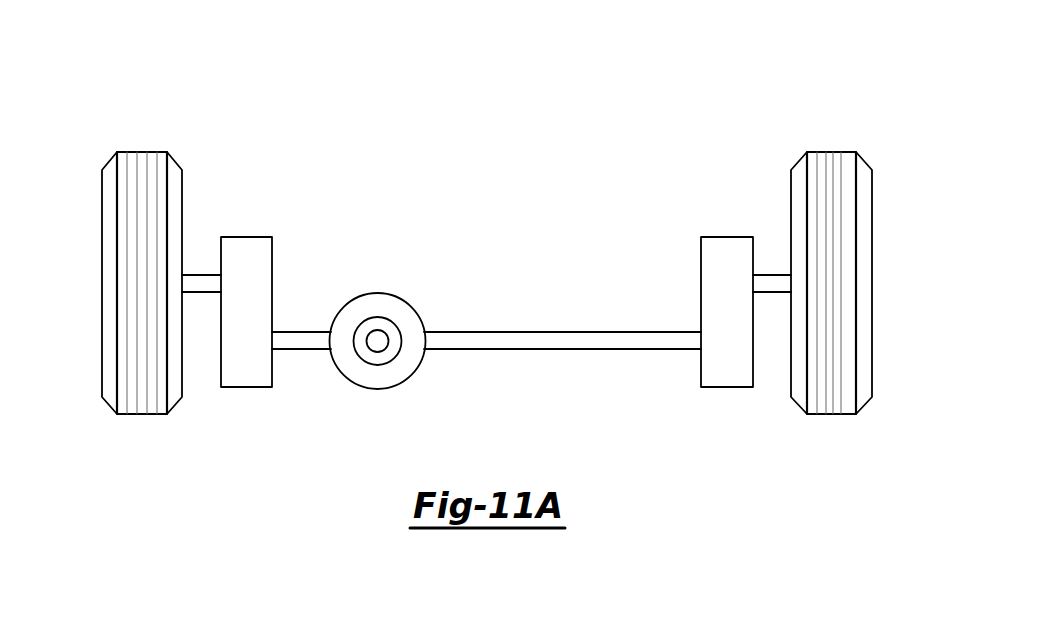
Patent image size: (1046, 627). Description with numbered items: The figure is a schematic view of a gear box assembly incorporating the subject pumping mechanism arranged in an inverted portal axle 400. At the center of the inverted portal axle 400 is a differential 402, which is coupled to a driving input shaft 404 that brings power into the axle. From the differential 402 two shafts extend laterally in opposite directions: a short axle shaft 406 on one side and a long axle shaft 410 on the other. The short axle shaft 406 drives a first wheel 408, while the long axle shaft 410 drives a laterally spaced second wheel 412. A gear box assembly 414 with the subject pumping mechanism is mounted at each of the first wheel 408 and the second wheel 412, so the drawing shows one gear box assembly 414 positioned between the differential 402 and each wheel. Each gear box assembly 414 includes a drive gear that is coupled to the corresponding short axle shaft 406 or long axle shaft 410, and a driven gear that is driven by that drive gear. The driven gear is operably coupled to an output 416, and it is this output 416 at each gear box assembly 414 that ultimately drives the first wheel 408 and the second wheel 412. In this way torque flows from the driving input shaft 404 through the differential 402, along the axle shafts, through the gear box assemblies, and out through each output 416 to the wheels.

The inverted portal axle 400 is at (585, 218).
The differential 402 is at (387, 328).
The driving input shaft 404 is at (381, 352).
The short axle shaft 406 is at (303, 334).
The first wheel 408 is at (142, 152).
The long axle shaft 410 is at (563, 333).
The second wheel 412 is at (822, 152).
The gear box assembly 414 is at (244, 238).
The output 416 is at (192, 293).